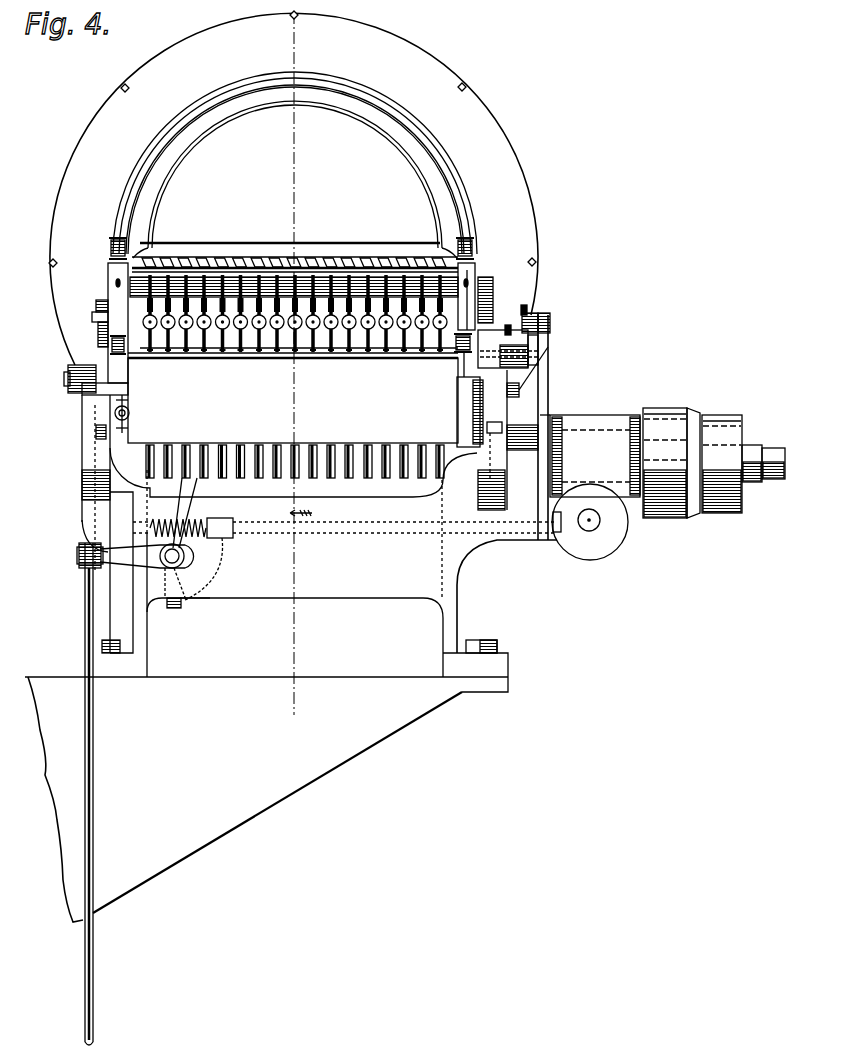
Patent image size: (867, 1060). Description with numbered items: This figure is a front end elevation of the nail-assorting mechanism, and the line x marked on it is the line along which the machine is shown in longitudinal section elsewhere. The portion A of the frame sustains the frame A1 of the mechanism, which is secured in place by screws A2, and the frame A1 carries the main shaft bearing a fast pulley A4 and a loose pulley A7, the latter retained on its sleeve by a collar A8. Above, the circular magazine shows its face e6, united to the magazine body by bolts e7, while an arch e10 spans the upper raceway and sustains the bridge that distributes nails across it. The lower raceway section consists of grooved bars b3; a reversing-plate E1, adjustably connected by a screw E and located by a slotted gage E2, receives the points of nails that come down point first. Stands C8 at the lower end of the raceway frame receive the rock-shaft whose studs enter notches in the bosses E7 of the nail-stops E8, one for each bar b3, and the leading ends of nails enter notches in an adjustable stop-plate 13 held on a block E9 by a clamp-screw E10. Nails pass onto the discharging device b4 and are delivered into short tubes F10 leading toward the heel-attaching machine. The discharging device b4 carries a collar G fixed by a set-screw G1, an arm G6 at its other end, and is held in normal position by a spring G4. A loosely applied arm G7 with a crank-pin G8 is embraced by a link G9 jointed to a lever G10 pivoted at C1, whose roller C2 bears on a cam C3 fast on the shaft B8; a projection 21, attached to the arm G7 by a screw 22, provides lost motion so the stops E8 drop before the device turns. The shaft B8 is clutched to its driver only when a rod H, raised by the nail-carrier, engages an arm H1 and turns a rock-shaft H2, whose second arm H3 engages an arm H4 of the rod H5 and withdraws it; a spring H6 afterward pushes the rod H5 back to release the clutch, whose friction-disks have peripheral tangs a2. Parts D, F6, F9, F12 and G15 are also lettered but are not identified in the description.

The section line x is at (291, 372).
The face of the magazine e6 is at (441, 60).
The bolts e7 is at (38, 262).
The arch e10 is at (295, 165).
The bosses of the nail-stops E7 is at (400, 280).
The adjustable stop-plate 13 is at (216, 352).
The nail-stops E8 is at (413, 331).
The block E9 is at (128, 366).
The raceway-bars b3 is at (270, 353).
The gage E2 is at (300, 411).
The short tubes F10 is at (268, 488).
The screw E is at (112, 244).
The reversing-plate E1 is at (110, 262).
The stands C8 is at (112, 284).
The spring G4 is at (98, 305).
The gear G15 is at (100, 322).
The arm G6 is at (106, 336).
The clamp-screw E10 is at (118, 336).
The bracket D is at (68, 382).
The roller F9 is at (115, 417).
The stop F12 is at (98, 440).
The frame of the nail-assorting mechanism A1 is at (344, 592).
The portion of the frame A is at (364, 785).
The screws A2 is at (102, 646).
The rod H is at (130, 942).
The arm H1 is at (78, 558).
The rock-shaft H2 is at (155, 565).
The second arm H3 is at (167, 590).
The arm of the rod H4 is at (188, 600).
The spring H6 is at (218, 519).
The rod H5 is at (408, 533).
The block F6 is at (458, 388).
The set-screw G1 is at (497, 328).
The collar G is at (507, 378).
The peripheral tangs a2 is at (467, 324).
The projection 21 is at (508, 326).
The screw 22 is at (524, 306).
The link G9 is at (540, 314).
The crank-pin G8 is at (546, 323).
The pivot C1 is at (549, 438).
The arm G7 is at (538, 340).
The discharging device b4 is at (533, 352).
The lever G10 is at (540, 461).
The roller C2 is at (561, 517).
The cam C3 is at (606, 552).
The shaft B8 is at (598, 510).
The fast pulley A4 is at (680, 405).
The loose pulley A7 is at (733, 400).
The collar A8 is at (792, 440).